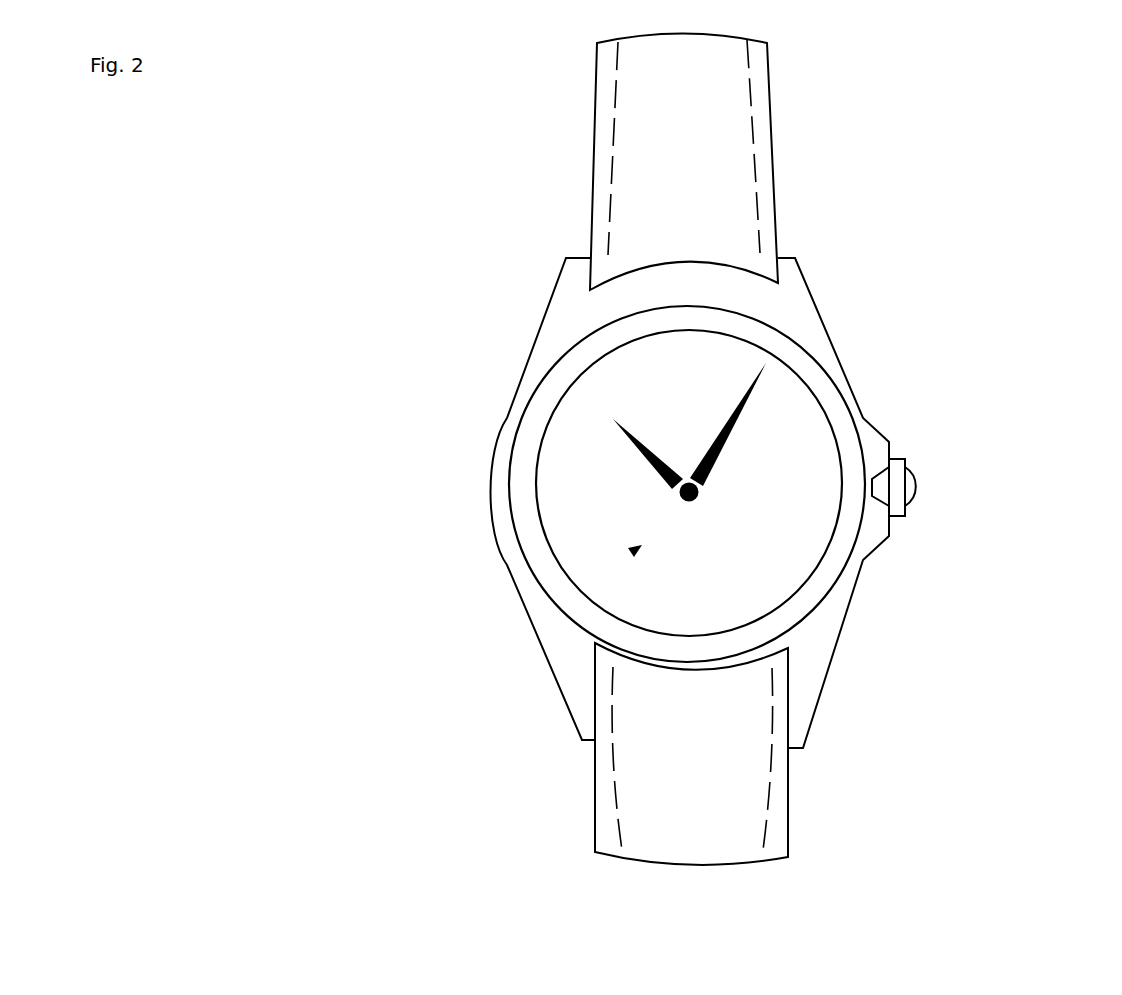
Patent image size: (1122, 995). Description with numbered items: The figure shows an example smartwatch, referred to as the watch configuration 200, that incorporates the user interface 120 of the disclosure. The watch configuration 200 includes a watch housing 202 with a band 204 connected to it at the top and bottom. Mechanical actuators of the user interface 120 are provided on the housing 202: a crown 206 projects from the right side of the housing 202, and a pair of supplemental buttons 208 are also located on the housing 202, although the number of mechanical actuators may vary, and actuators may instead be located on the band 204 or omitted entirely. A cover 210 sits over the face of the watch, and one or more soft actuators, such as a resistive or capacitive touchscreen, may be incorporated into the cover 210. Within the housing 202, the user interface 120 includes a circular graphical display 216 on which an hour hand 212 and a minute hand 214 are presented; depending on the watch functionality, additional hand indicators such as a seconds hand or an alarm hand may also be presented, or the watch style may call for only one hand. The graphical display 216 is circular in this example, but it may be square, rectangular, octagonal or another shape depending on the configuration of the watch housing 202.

The watch configuration 200 is at (203, 133).
The watch housing 202 is at (560, 274).
The band 204 is at (773, 152).
The crown 206 is at (920, 480).
The supplemental buttons 208 is at (529, 355).
The cover 210 is at (793, 563).
The user interface 120 is at (692, 441).
The hour hand 212 is at (647, 460).
The minute hand 214 is at (737, 420).
The graphical display 216 is at (638, 548).